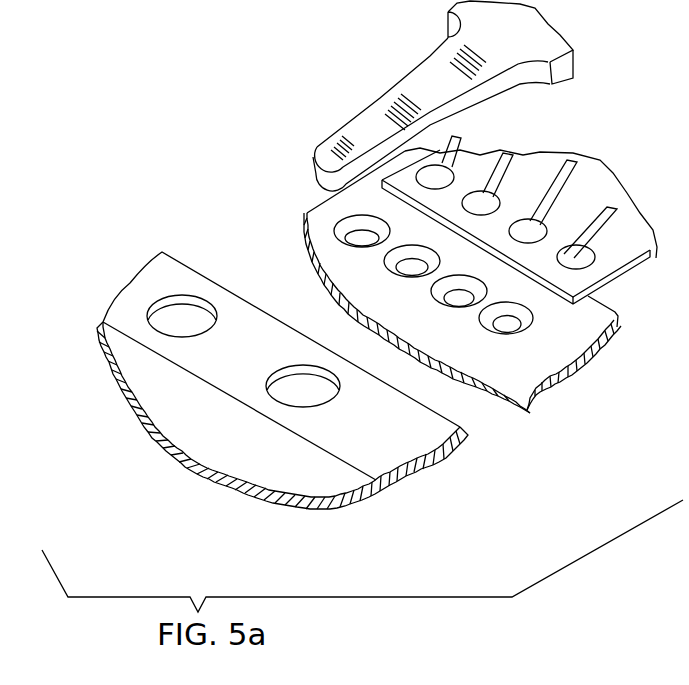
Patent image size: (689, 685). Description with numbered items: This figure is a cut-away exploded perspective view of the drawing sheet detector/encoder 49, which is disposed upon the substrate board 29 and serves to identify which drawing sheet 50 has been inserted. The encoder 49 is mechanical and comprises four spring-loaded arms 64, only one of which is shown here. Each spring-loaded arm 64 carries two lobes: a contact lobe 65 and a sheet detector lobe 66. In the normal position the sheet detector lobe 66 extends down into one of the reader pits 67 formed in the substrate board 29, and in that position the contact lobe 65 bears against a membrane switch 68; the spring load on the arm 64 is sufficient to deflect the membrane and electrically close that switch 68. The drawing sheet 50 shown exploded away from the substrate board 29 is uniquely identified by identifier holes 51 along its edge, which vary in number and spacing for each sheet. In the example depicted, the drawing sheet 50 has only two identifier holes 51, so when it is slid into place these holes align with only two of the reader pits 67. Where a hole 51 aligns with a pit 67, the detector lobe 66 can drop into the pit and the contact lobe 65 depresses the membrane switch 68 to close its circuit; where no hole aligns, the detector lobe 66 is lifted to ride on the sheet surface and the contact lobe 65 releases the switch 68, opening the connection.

The drawing sheet detector/encoder 49 is at (397, 54).
The spring-loaded arm 64 is at (498, 48).
The contact lobe 65 is at (493, 157).
The sheet detector lobe 66 is at (307, 213).
The reader pit 67 is at (357, 237).
The membrane switch 68 is at (487, 200).
The substrate board 29 is at (598, 350).
The drawing sheet 50 is at (112, 338).
The identifier holes 51 is at (175, 320).